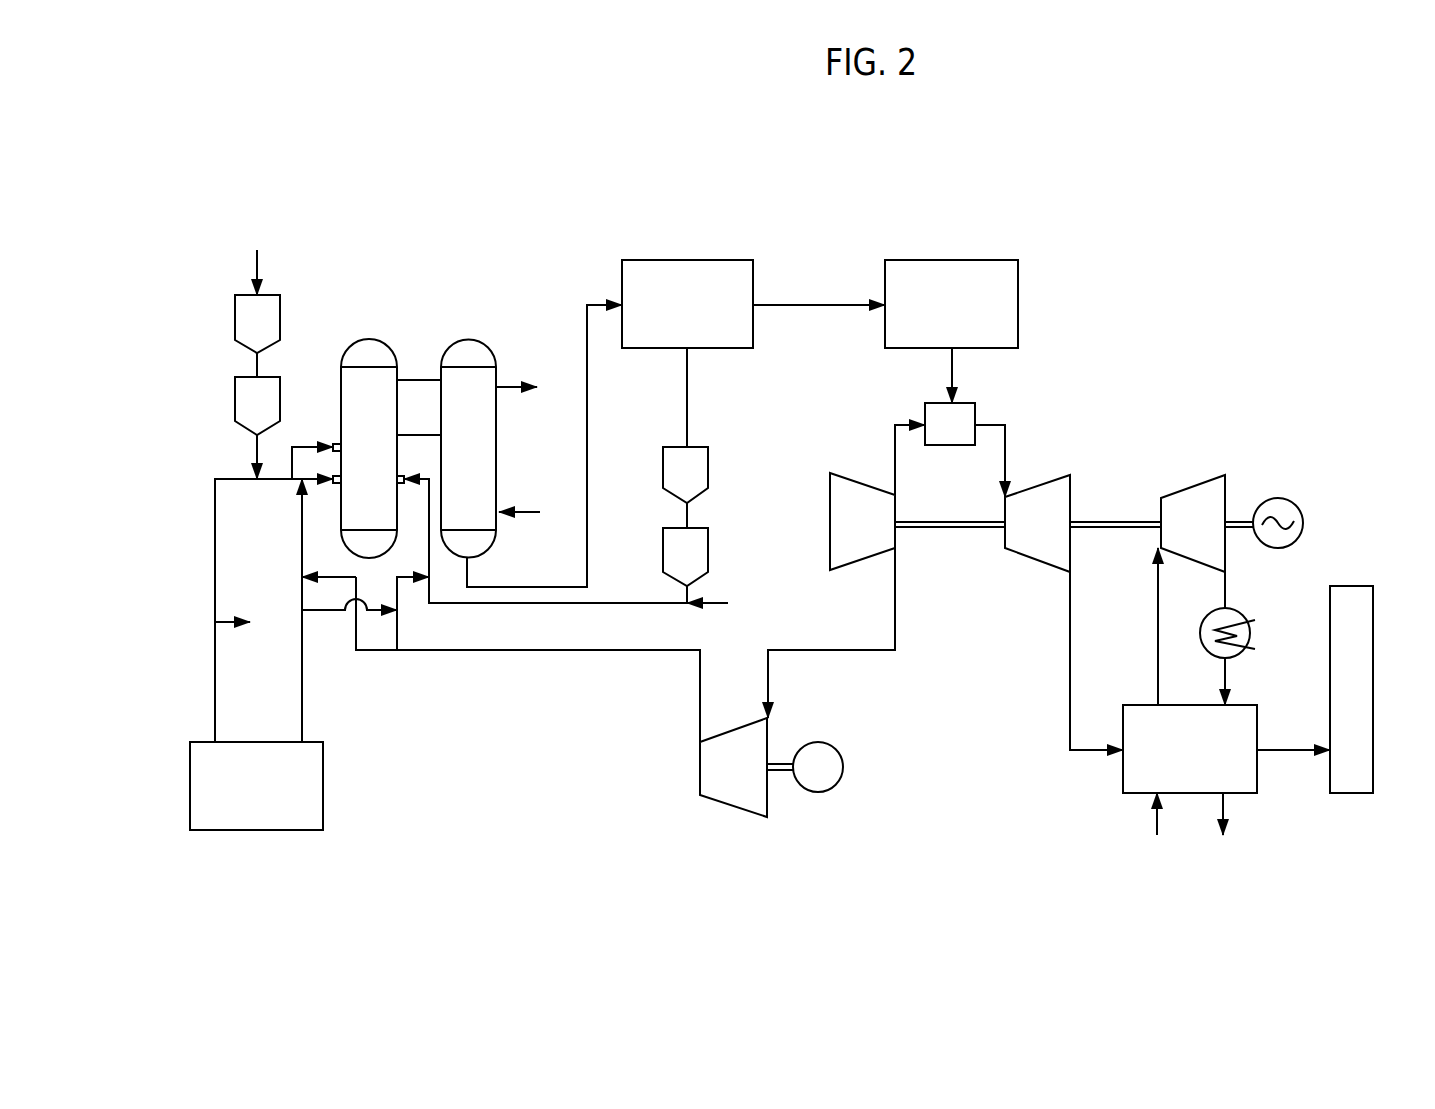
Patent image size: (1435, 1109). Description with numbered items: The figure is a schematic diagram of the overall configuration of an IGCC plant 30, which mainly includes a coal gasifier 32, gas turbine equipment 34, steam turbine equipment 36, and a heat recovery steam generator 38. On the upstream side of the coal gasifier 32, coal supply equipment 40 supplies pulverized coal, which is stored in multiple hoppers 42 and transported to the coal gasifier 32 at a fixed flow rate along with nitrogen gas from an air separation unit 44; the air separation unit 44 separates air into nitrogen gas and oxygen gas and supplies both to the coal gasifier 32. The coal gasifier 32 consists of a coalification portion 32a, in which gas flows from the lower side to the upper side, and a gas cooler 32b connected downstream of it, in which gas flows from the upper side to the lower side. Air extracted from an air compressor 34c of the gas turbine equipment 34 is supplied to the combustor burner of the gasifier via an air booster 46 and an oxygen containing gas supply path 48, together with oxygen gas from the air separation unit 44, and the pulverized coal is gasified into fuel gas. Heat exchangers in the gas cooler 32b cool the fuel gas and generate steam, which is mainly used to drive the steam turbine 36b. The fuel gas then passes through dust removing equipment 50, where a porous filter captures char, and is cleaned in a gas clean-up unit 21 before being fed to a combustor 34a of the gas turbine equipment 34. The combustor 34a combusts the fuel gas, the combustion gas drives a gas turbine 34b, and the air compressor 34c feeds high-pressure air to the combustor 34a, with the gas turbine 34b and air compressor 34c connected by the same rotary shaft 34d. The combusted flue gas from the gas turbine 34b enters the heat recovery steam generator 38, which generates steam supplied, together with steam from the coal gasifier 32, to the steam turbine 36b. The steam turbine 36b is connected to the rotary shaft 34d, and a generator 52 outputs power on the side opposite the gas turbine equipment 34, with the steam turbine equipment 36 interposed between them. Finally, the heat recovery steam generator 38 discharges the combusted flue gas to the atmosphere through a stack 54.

The IGCC plant 30 is at (842, 178).
The coal supply equipment 40 is at (292, 260).
The hopper 42 is at (234, 301).
The coal gasifier 32 is at (440, 374).
The coalification portion 32a is at (356, 335).
The gas cooler 32b is at (474, 333).
The air separation unit 44 is at (323, 797).
The oxygen containing gas supply path 48 is at (541, 651).
The air booster 46 is at (737, 727).
The dust removing equipment 50 is at (680, 260).
The gas clean-up unit 21 is at (950, 260).
The gas turbine equipment 34 is at (934, 549).
The combustor 34a is at (975, 416).
The gas turbine 34b is at (1072, 489).
The air compressor 34c is at (850, 473).
The rotary shaft 34d is at (948, 521).
The steam turbine equipment 36 is at (1230, 533).
The steam turbine 36b is at (1228, 484).
The generator 52 is at (1303, 524).
The heat recovery steam generator 38 is at (1178, 704).
The stack 54 is at (1373, 651).